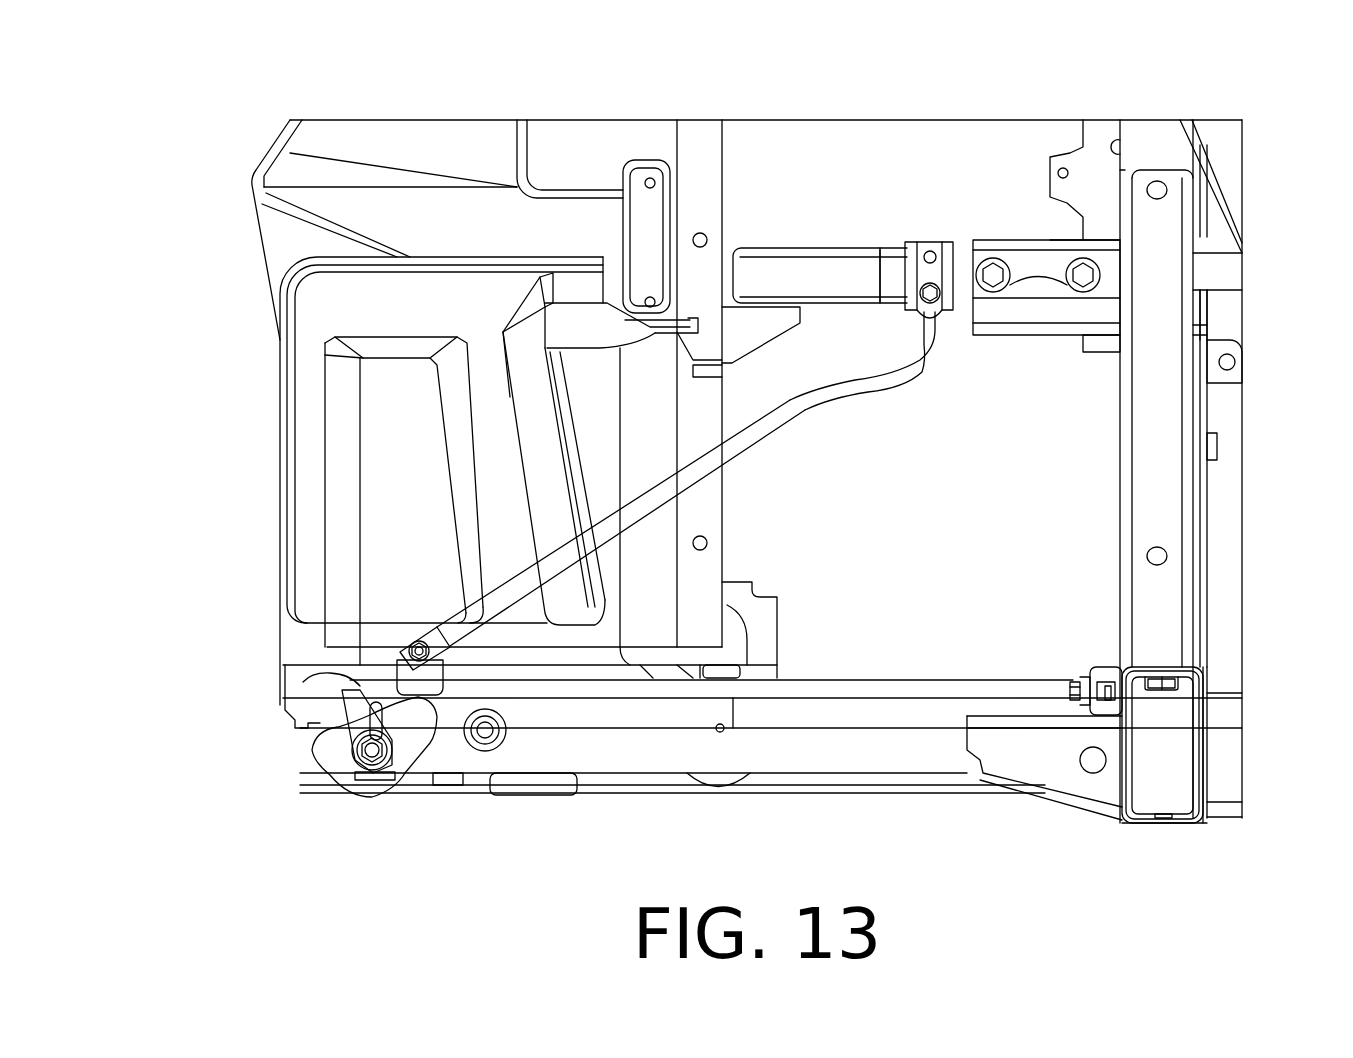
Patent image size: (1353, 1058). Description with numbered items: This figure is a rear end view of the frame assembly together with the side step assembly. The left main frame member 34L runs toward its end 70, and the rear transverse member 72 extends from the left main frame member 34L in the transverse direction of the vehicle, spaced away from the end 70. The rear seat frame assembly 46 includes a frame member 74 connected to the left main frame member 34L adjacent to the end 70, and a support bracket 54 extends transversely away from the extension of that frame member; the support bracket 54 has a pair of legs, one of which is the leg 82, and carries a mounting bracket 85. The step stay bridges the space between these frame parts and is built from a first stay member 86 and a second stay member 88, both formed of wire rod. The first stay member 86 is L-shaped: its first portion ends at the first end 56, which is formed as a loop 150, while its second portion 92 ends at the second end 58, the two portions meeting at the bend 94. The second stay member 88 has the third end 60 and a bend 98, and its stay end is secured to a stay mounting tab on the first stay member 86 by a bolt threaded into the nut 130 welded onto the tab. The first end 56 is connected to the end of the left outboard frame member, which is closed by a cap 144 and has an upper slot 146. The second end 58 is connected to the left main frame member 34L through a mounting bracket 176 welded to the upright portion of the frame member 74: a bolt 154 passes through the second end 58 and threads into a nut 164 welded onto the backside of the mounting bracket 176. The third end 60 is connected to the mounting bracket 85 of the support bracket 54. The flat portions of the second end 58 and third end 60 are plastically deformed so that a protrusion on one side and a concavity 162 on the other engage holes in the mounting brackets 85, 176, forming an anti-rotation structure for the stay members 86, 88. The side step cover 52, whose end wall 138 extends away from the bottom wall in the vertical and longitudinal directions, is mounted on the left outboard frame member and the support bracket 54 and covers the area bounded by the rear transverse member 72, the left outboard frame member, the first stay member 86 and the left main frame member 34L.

The rear seat frame assembly 46 is at (1178, 110).
The side step cover 52 is at (250, 443).
The support bracket 54 is at (832, 258).
The first end 56 is at (371, 748).
The second end 58 is at (1083, 677).
The third end 60 is at (906, 239).
The end 70 is at (1165, 822).
The rear transverse member 72 is at (640, 765).
The frame member 74 is at (1120, 492).
The leg 82 is at (840, 298).
The mounting bracket 85 is at (954, 241).
The first stay member 86 is at (720, 661).
The second stay member 88 is at (750, 440).
The second portion 92 is at (907, 688).
The bend 94 is at (357, 684).
The bend 98 is at (822, 395).
The nut 130 is at (413, 640).
The end wall 138 is at (310, 538).
The cap 144 is at (423, 730).
The upper slot 146 is at (433, 717).
The loop 150 is at (427, 745).
The bolt 154 is at (934, 318).
The concavity 162 is at (924, 248).
The nut 164 is at (1105, 697).
The mounting bracket 176 is at (1087, 706).
The left main frame member 34L is at (1207, 753).